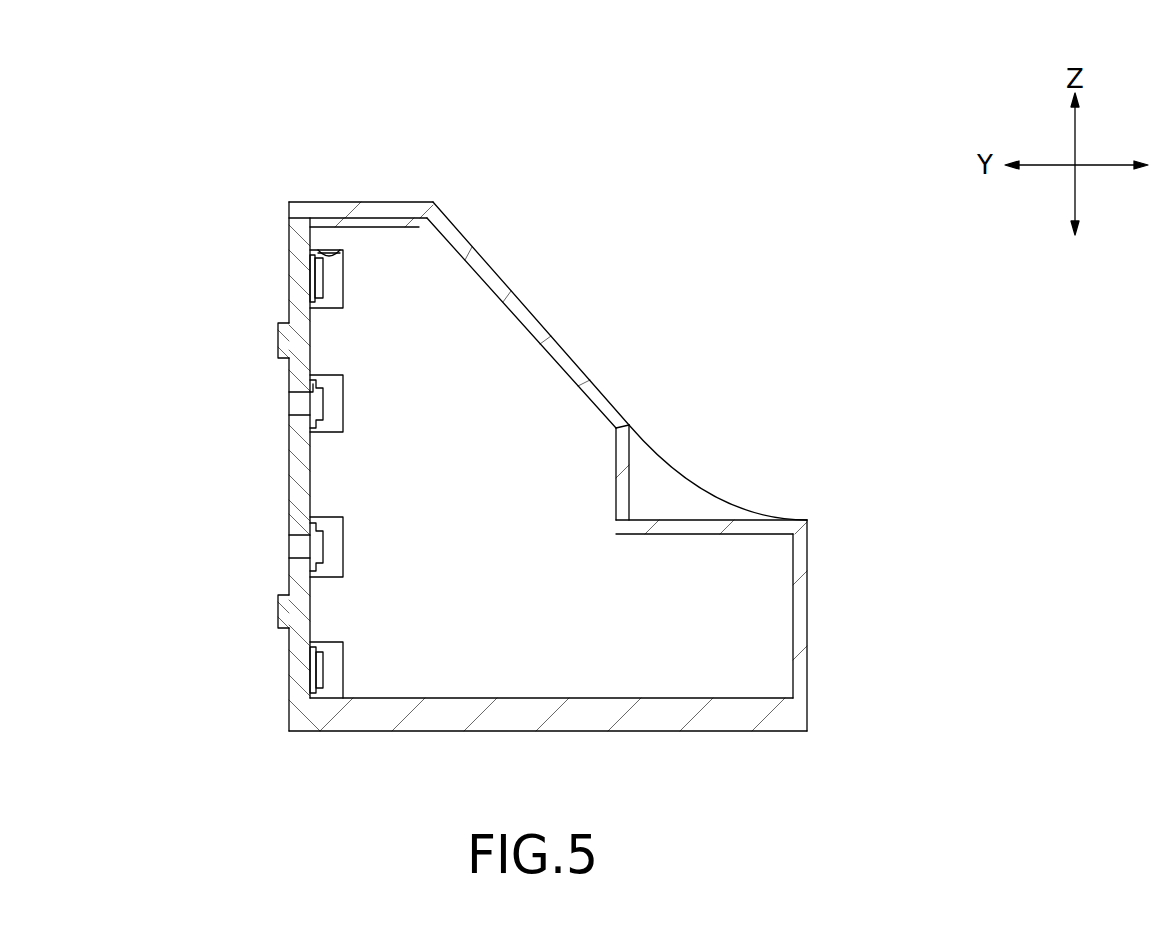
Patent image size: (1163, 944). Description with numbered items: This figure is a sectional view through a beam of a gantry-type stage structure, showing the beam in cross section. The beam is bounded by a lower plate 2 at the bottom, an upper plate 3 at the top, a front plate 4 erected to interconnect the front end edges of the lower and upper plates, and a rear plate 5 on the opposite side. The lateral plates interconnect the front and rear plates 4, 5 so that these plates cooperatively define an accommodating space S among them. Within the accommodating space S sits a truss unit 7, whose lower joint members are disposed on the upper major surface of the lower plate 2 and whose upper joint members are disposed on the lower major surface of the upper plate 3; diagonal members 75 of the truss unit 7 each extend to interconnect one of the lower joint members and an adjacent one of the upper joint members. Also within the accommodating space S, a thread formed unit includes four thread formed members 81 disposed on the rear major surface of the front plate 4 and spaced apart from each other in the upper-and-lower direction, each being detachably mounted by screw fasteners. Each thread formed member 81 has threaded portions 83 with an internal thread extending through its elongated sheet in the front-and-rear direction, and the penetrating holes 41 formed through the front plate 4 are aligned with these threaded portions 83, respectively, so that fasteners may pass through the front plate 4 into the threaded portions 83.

The lower plate 2 is at (594, 748).
The upper plate 3 is at (379, 190).
The front plate 4 is at (278, 478).
The penetrating holes 41 is at (296, 546).
The rear plate 5 is at (815, 596).
The truss unit 7 is at (463, 321).
The diagonal members 75 is at (530, 365).
The thread formed members 81 is at (318, 535).
The threaded portions 83 is at (322, 572).
The accommodating space S is at (512, 503).